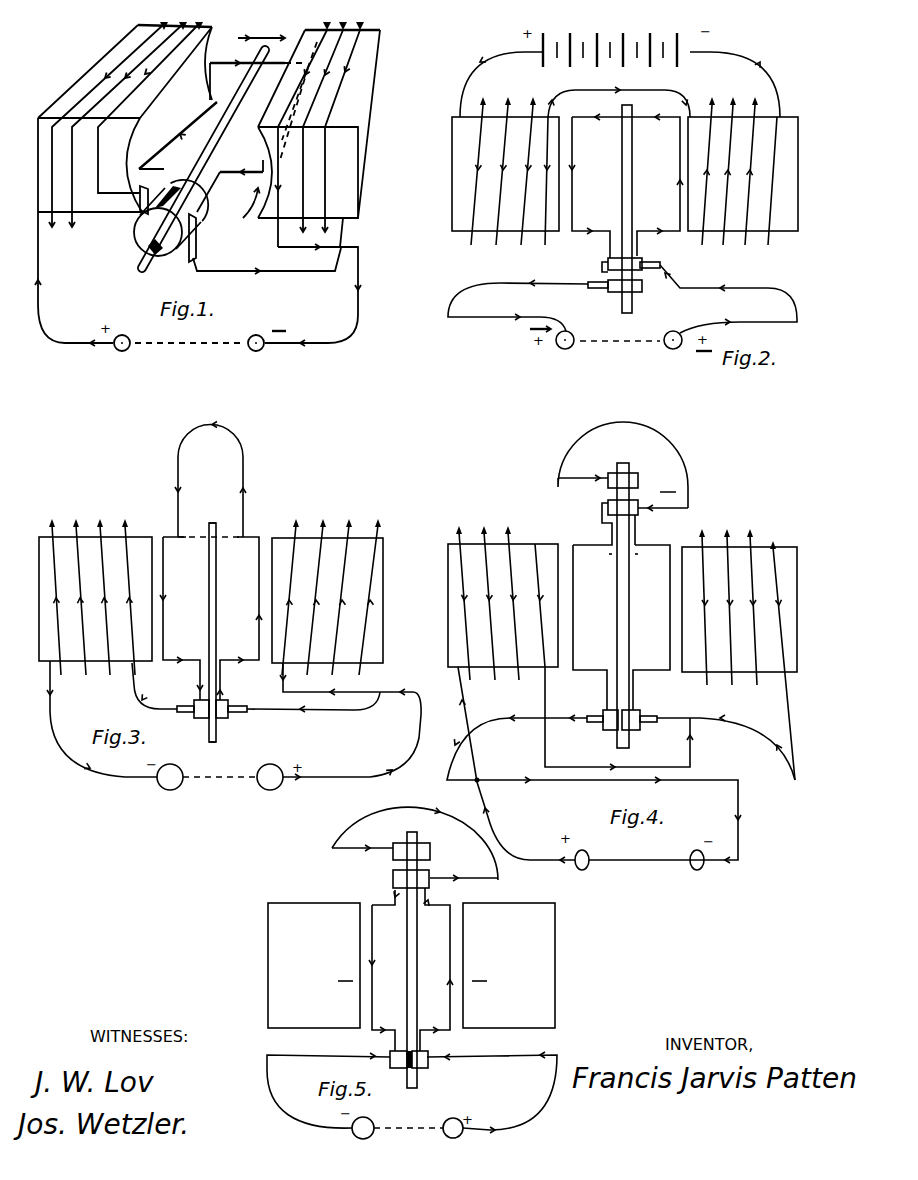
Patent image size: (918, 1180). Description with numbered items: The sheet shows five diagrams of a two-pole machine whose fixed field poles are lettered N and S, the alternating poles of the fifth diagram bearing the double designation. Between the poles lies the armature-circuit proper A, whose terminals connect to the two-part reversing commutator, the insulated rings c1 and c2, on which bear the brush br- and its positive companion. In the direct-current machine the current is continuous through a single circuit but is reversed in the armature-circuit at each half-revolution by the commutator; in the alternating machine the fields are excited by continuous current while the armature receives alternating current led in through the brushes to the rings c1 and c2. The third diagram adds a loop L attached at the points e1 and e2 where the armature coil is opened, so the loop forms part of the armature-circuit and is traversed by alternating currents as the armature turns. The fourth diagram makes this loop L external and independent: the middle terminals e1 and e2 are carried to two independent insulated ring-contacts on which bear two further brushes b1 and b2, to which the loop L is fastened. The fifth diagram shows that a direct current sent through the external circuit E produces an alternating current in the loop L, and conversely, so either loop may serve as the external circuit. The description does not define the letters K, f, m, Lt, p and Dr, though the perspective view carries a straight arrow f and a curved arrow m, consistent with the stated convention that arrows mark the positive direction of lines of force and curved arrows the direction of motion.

In FIG. 1, the field magnet core K is at (259, 18).
In FIG. 1, the north field pole N is at (125, 163).
In FIG. 2, the north field pole N is at (743, 171).
In FIG. 3, the north field pole N is at (327, 597).
In FIG. 4, the north field pole N is at (503, 603).
In FIG. 5, the north field pole N is at (509, 965).
In FIG. 1, the south field pole S is at (319, 134).
In FIG. 2, the south field pole S is at (505, 171).
In FIG. 3, the south field pole S is at (95, 597).
In FIG. 4, the south field pole S is at (739, 654).
In FIG. 5, the south field pole S is at (314, 965).
In FIG. 1, the armature-circuit proper A is at (222, 159).
In FIG. 2, the armature-circuit proper A is at (626, 209).
In FIG. 3, the armature-circuit proper A is at (211, 632).
In FIG. 4, the armature-circuit proper A is at (621, 605).
In FIG. 5, the armature-circuit proper A is at (411, 960).
In FIG. 1, the direction of field f is at (261, 29).
In FIG. 1, the direction of motion m is at (248, 202).
In FIG. 1, the commutator segment / insulated ring c1 is at (158, 232).
In FIG. 2, the commutator segment / insulated ring c1 is at (622, 265).
In FIG. 3, the commutator segment / insulated ring c1 is at (222, 709).
In FIG. 4, the commutator segment / insulated ring c1 is at (624, 601).
In FIG. 5, the commutator segment / insulated ring c1 is at (409, 969).
In FIG. 1, the commutator segment / insulated ring c2 is at (174, 214).
In FIG. 2, the commutator segment / insulated ring c2 is at (625, 286).
In FIG. 3, the commutator segment / insulated ring c2 is at (201, 709).
In FIG. 4, the commutator segment / insulated ring c2 is at (620, 615).
In FIG. 5, the commutator segment / insulated ring c2 is at (411, 955).
In FIG. 1, the negative brush br- is at (265, 244).
In FIG. 2, the negative brush br- is at (528, 298).
In FIG. 3, the negative brush br- is at (163, 687).
In FIG. 4, the negative brush br- is at (594, 778).
In FIG. 3, the loop L is at (210, 480).
In FIG. 4, the loop L is at (623, 465).
In FIG. 5, the loop L is at (415, 843).
In FIG. 5, the circuit loop Lt is at (415, 863).
In FIG. 3, the armature-circuit opening point e1 is at (246, 530).
In FIG. 4, the armature-circuit opening point e1 is at (640, 553).
In FIG. 3, the armature-circuit opening point e2 is at (183, 530).
In FIG. 4, the armature-circuit opening point e2 is at (606, 555).
In FIG. 4, the brush b1 is at (583, 471).
In FIG. 4, the brush b2 is at (663, 499).
In FIG. 3, the shaft pivot p is at (214, 633).
In FIG. 5, the circuit conductor Dr is at (492, 1092).
In FIG. 5, the external circuit E is at (365, 1096).